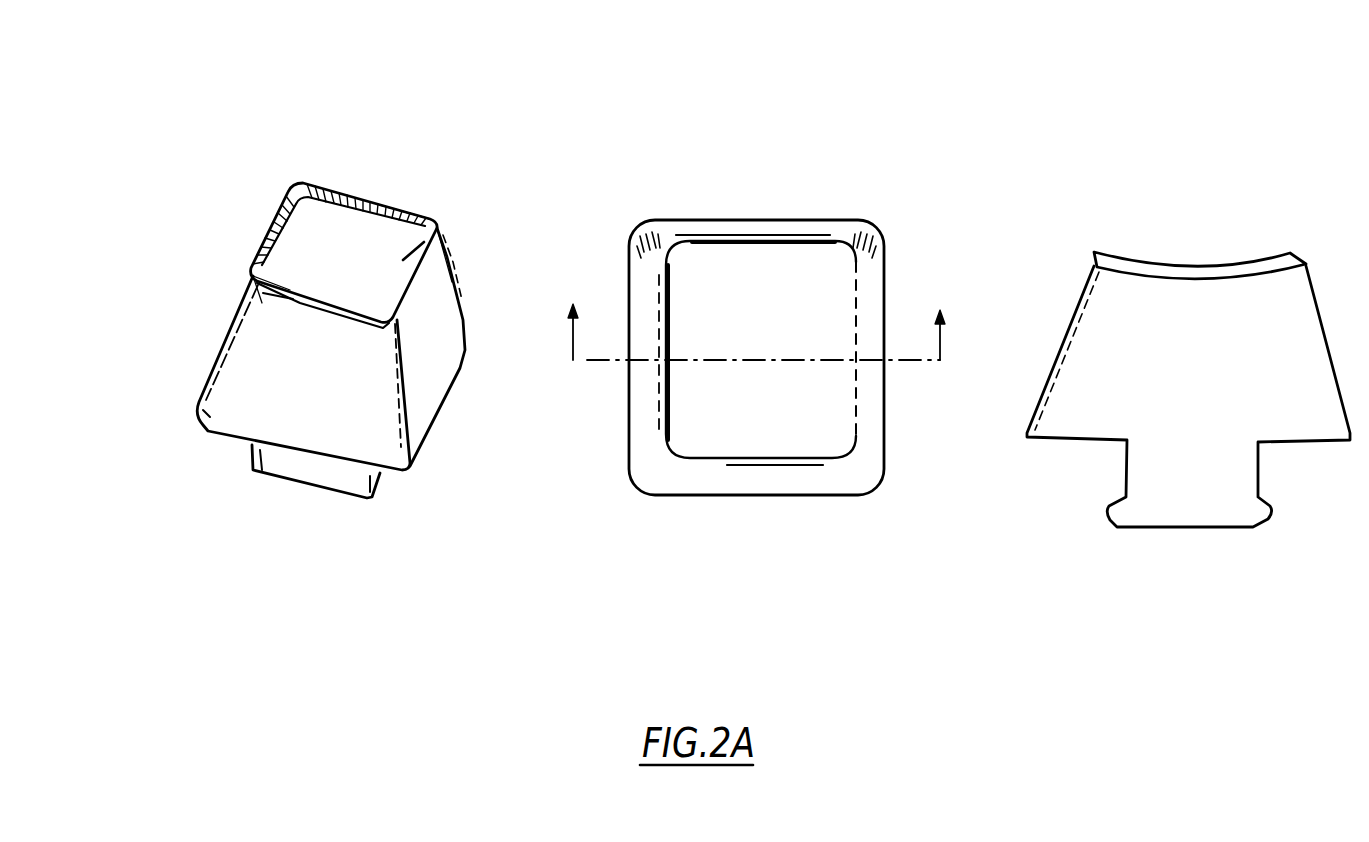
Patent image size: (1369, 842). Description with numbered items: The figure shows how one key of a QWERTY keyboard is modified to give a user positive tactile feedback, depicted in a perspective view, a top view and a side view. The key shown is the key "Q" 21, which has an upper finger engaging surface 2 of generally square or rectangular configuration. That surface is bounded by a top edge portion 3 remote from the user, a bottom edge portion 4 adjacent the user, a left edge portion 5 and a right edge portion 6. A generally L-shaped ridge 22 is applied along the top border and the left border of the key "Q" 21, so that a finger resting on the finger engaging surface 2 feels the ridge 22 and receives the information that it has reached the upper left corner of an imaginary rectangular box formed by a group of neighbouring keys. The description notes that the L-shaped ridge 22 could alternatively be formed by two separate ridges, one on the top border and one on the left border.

The key "Q" 21 is at (289, 486).
The "L" shaped ridge 22 is at (337, 187).
The upper finger engaging surface 2 is at (447, 258).
The top edge portion 3 is at (427, 207).
The bottom edge portion 4 is at (262, 303).
The left edge portion 5 is at (253, 276).
The right edge portion 6 is at (415, 270).